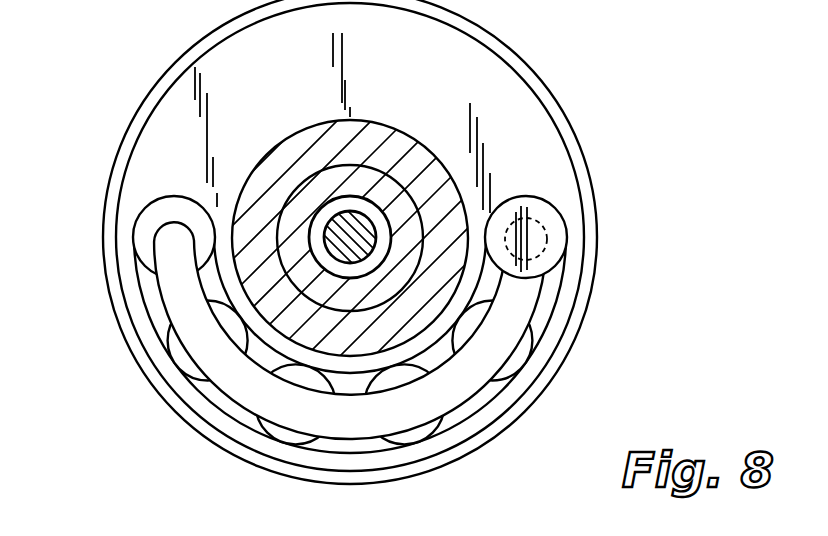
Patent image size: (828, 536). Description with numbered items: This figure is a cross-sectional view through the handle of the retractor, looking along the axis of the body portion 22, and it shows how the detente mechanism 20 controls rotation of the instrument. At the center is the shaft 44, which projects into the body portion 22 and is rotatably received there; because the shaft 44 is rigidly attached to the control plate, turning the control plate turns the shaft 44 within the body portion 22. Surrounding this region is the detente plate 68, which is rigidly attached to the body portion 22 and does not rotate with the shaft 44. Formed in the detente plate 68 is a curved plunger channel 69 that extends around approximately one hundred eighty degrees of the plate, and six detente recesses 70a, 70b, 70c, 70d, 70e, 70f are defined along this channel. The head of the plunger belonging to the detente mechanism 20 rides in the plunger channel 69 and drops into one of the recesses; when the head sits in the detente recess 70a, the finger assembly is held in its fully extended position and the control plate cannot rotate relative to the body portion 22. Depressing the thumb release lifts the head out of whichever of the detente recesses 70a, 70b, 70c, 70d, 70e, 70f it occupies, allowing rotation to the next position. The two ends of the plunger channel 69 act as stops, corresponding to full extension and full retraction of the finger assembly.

The detente mechanism 20 is at (606, 240).
The body portion 22 is at (273, 160).
The shaft 44 is at (348, 230).
The detente plate 68 is at (173, 152).
The plunger channel 69 is at (248, 386).
The detente recess 70a is at (557, 201).
The detente recess 70b is at (530, 327).
The detente recess 70c is at (440, 423).
The detente recess 70d is at (310, 437).
The detente recess 70e is at (205, 387).
The detente recess 70f is at (145, 273).